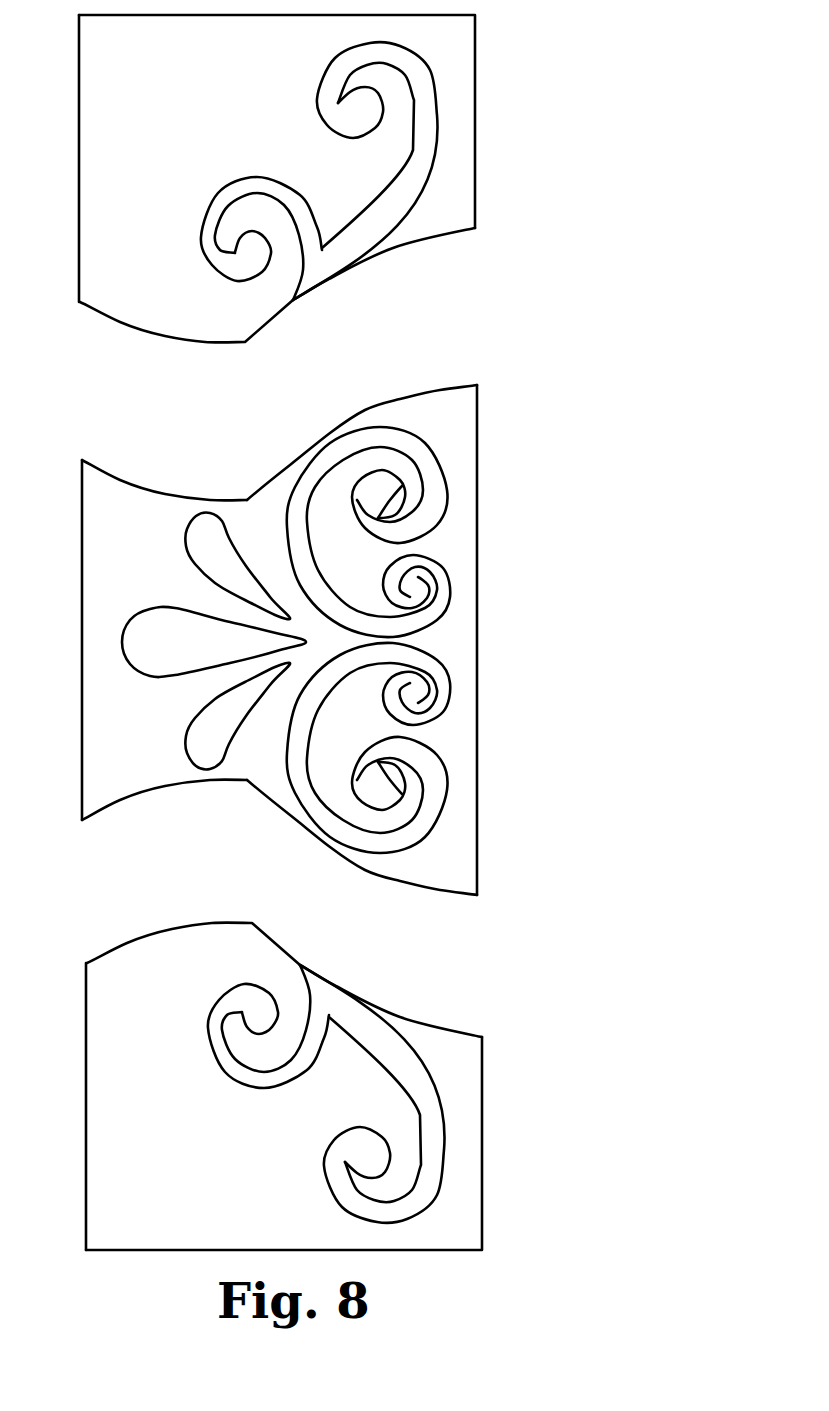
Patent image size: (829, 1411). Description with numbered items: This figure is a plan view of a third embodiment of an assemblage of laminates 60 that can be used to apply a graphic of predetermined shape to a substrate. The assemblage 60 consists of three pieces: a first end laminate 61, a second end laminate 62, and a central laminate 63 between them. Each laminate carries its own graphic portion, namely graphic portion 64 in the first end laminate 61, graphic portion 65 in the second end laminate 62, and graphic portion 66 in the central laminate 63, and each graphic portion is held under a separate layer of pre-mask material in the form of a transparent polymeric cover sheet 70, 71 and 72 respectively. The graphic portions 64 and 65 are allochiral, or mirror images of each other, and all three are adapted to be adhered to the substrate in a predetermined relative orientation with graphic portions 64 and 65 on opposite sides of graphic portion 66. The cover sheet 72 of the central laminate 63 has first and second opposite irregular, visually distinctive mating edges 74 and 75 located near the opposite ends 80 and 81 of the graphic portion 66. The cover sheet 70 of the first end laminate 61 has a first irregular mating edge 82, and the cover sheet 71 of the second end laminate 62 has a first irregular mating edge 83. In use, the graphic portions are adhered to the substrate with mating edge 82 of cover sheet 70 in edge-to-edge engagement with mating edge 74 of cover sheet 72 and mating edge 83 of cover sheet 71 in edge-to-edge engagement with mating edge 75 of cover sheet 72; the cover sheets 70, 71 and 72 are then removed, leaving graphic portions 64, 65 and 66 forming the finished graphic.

The assemblage of laminates 60 is at (484, 112).
The first end laminate 61 is at (76, 197).
The second end laminate 62 is at (83, 1147).
The central laminate 63 is at (80, 719).
The graphic portion 64 is at (252, 177).
The graphic portion 65 is at (232, 1082).
The graphic portion 66 is at (187, 552).
The transparent polymeric cover sheet 70 is at (148, 272).
The transparent polymeric cover sheet 71 is at (151, 993).
The transparent polymeric cover sheet 72 is at (148, 768).
The first irregular visually distinctive mating edge 74 is at (167, 493).
The second irregular visually distinctive mating edge 75 is at (192, 783).
The end of graphic portion 80 is at (343, 432).
The end of graphic portion 81 is at (313, 828).
The first irregular visually distinctive mating edge 82 is at (323, 283).
The first irregular visually distinctive mating edge 83 is at (288, 955).